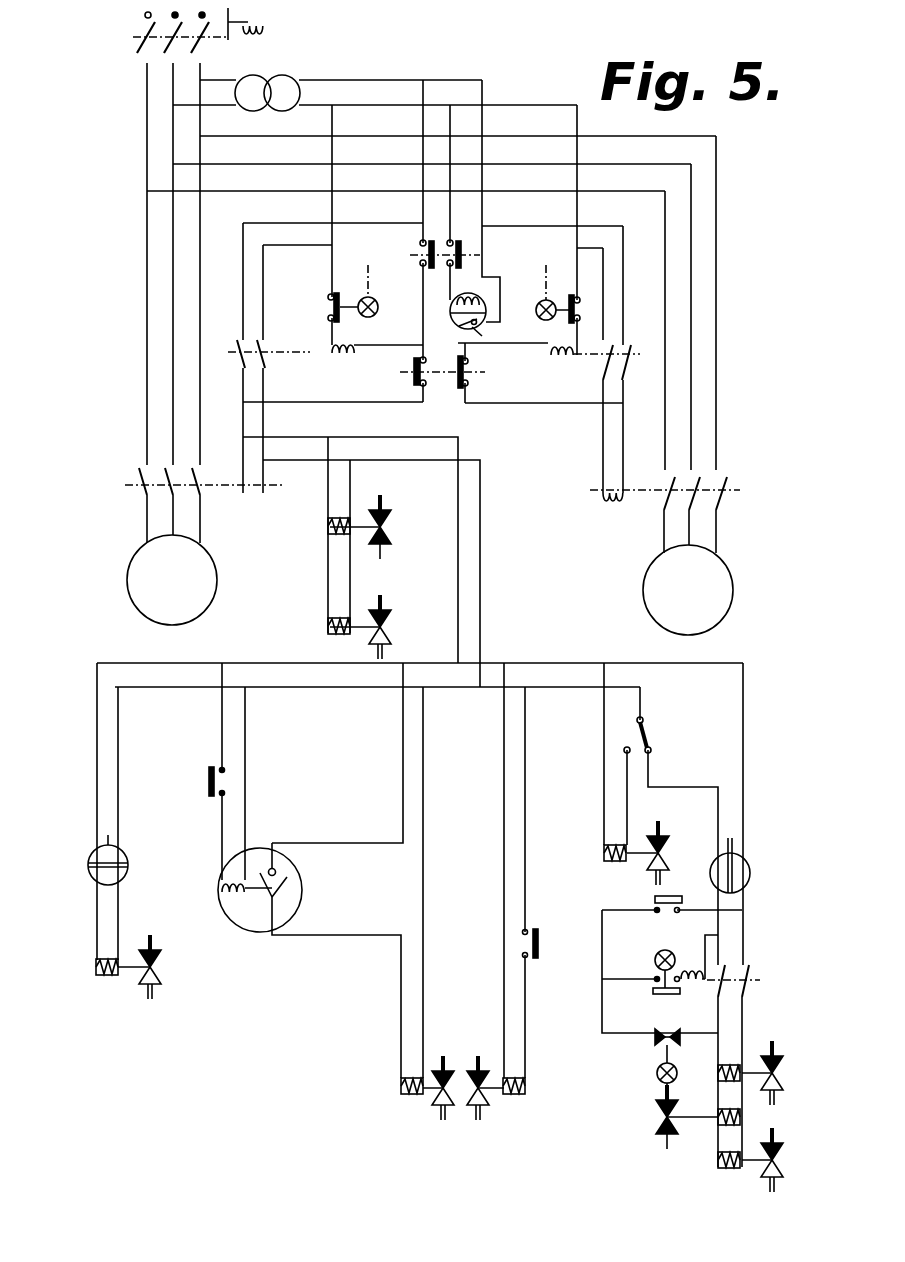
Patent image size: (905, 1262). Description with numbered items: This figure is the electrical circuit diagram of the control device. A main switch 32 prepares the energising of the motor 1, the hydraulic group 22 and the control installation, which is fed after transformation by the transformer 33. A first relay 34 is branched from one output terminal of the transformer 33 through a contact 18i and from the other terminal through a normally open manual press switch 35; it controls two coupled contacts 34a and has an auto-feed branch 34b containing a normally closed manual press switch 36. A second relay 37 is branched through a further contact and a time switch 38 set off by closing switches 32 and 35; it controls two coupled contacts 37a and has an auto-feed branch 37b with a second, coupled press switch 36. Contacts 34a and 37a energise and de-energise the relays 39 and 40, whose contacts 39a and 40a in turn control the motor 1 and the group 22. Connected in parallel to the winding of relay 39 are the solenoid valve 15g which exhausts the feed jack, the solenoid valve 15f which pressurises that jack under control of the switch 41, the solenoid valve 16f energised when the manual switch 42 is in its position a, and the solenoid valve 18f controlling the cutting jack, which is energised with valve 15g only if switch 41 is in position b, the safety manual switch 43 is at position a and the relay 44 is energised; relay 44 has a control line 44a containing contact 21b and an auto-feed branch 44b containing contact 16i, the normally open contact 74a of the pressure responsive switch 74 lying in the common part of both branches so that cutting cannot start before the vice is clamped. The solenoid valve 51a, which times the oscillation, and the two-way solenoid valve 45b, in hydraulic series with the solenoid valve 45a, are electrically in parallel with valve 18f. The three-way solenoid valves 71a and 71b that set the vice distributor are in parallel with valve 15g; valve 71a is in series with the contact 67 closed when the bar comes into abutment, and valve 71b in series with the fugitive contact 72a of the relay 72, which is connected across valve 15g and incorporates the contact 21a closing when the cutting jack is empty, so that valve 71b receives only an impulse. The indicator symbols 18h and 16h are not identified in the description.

The main switch 32 is at (205, 30).
The transformer 33 is at (290, 85).
The manual press switch 35 is at (457, 242).
The contact 18i is at (567, 313).
The signal lamp 18h is at (539, 300).
The time switch 38 is at (449, 312).
The first relay 34 is at (377, 370).
The coupled contacts 34a is at (262, 352).
The auto-feed branch 34b is at (332, 402).
The manual press switch 36 is at (462, 361).
The second relay 37 is at (586, 370).
The coupled contacts 37a is at (637, 327).
The auto-feed branch 37b is at (483, 403).
The contacts 39a is at (137, 470).
The relay 39 is at (248, 491).
The motor 1 is at (180, 598).
The contacts 40a is at (727, 481).
The relay 40 is at (584, 495).
The group 22 is at (702, 603).
The solenoid valve 15g is at (328, 527).
The solenoid valve 45a is at (328, 627).
The manual switch 42 is at (140, 865).
The solenoid valve 16f is at (102, 975).
The contact 21a is at (209, 785).
The relay 72 is at (222, 893).
The contact 72a is at (283, 888).
The three-way solenoid valve 71b is at (401, 1086).
The three-way solenoid valve 71a is at (525, 1086).
The jaw 67 is at (538, 945).
The switch 41 is at (648, 740).
The solenoid valve 15f is at (604, 853).
The safety manual switch 43 is at (750, 873).
The contact 21b is at (685, 887).
The control line 44a is at (602, 935).
The auto-feed branch 44b is at (602, 1028).
The pressure responsive switch 74 is at (646, 958).
The normally-open contact 74a is at (641, 1002).
The relay 44 is at (694, 971).
The contact 16i is at (668, 1032).
The signal lamp 16h is at (642, 1106).
The solenoid valve 18f is at (742, 1065).
The two-way solenoid valve 45b is at (742, 1117).
The solenoid valve 51a is at (718, 1168).